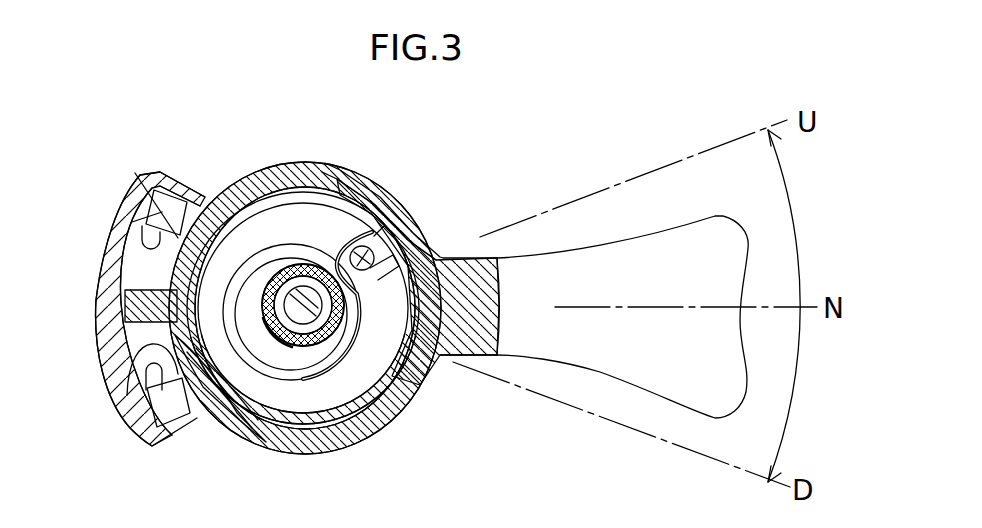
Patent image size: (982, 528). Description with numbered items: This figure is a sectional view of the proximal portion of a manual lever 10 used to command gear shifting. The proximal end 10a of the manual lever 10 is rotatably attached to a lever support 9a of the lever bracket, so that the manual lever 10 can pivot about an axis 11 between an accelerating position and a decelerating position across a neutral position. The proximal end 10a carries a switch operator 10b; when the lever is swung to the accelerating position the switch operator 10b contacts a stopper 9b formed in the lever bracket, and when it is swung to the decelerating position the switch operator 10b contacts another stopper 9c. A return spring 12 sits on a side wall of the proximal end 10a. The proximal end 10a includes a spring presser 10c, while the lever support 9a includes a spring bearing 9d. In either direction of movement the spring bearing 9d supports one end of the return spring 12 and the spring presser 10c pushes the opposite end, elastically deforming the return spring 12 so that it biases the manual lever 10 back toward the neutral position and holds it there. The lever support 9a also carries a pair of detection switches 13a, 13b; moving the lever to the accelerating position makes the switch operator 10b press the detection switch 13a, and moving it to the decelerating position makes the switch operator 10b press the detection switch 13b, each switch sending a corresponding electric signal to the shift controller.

The lever support 9a is at (256, 195).
The stopper 9b is at (117, 373).
The stopper 9c is at (135, 173).
The spring bearing 9d is at (392, 240).
The manual lever 10 is at (727, 216).
The proximal end 10a is at (385, 183).
The switch operator 10b is at (137, 304).
The spring presser 10c is at (345, 245).
The axis 11 is at (307, 308).
The return spring 12 is at (403, 404).
The detection switch 13a is at (173, 410).
The detection switch 13b is at (172, 200).